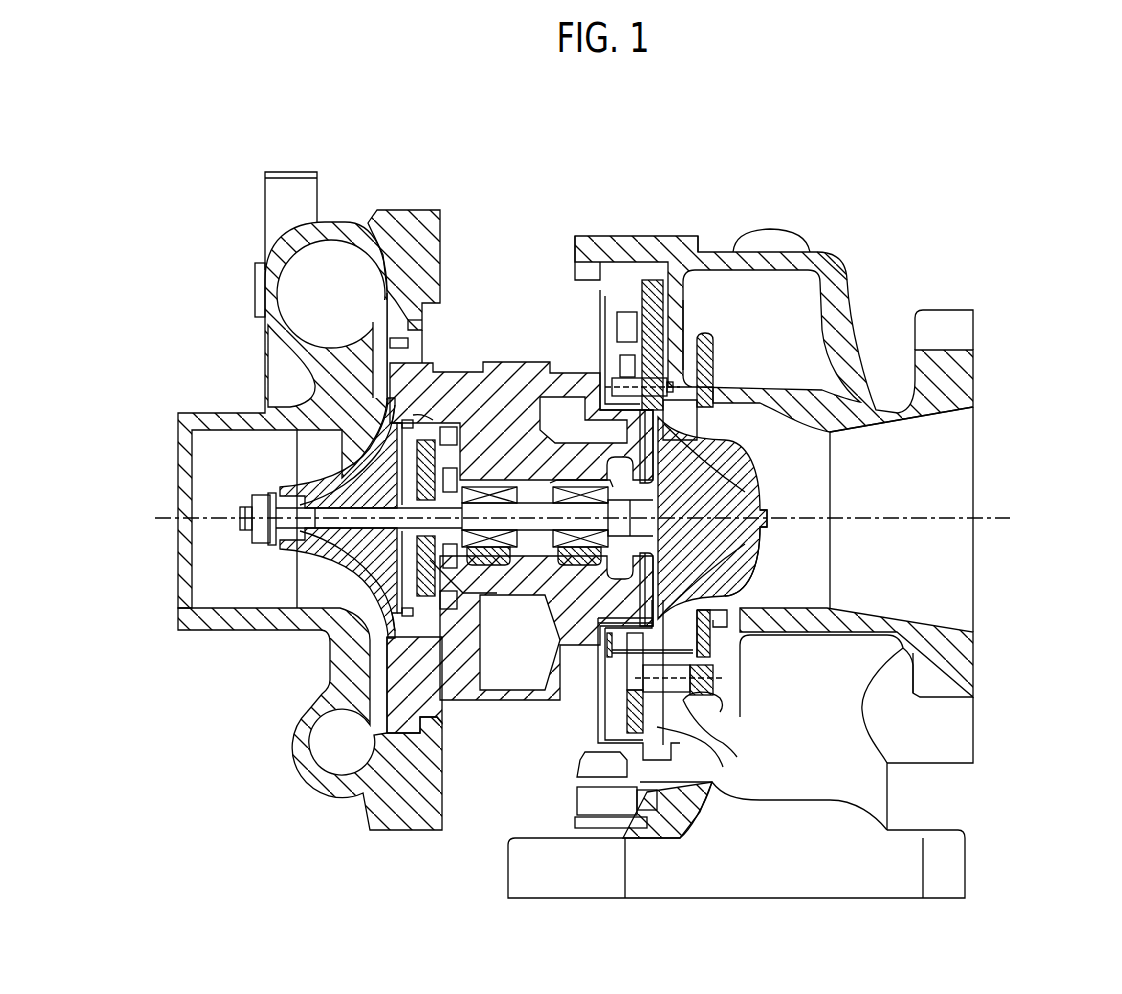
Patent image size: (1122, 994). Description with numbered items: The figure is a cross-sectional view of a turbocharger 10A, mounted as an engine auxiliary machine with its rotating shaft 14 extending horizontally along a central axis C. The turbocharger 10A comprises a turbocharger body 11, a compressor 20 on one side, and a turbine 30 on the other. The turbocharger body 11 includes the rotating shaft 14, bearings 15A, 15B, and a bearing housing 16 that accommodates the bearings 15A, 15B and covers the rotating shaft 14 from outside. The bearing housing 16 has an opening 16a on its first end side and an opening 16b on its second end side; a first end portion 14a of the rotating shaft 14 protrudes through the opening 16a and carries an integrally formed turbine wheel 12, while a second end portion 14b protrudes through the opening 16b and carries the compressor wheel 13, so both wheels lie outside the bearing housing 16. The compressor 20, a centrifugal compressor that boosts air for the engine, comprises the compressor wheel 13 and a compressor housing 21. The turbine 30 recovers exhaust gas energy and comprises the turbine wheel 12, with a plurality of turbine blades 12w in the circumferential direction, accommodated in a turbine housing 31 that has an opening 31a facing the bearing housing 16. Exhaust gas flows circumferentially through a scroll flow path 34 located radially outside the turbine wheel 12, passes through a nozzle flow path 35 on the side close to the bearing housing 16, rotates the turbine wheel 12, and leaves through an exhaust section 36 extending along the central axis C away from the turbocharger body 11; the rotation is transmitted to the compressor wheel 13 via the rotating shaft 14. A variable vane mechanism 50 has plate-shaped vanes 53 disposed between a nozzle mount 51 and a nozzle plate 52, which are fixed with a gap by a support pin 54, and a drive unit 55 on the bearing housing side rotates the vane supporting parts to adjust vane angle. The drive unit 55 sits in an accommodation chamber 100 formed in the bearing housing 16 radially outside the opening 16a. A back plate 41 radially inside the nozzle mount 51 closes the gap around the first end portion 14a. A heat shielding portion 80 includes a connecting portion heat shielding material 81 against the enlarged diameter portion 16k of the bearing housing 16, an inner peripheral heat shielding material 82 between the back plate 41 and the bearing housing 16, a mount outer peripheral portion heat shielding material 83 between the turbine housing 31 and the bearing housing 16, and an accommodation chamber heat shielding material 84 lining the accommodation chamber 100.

The turbocharger 10A is at (612, 185).
The turbocharger body 11 is at (450, 362).
The turbine wheel 12 is at (745, 488).
The turbine blade 12w is at (737, 582).
The compressor wheel 13 is at (305, 480).
The rotating shaft 14 is at (533, 530).
The first end portion 14a is at (762, 530).
The second end portion 14b is at (243, 521).
The bearing 15A is at (582, 565).
The bearing 15B is at (487, 565).
The bearing housing 16 is at (518, 387).
The opening 16a is at (742, 560).
The opening 16b is at (400, 598).
The enlarged diameter portion 16k is at (608, 312).
The compressor 20 is at (400, 200).
The compressor housing 21 is at (348, 224).
The turbine 30 is at (862, 291).
The turbine housing 31 is at (818, 268).
The opening 31a is at (585, 275).
The scroll flow path 34 is at (782, 255).
The nozzle flow path 35 is at (684, 370).
The exhaust section 36 is at (950, 425).
The back plate 41 is at (690, 462).
The variable vane mechanism 50 is at (718, 328).
The nozzle mount 51 is at (650, 280).
The nozzle plate 52 is at (703, 708).
The vane 53 is at (710, 627).
The support pin 54 is at (720, 692).
The drive unit 55 is at (588, 760).
The heat shielding portion 80 is at (624, 207).
The connecting portion heat shielding material 81 is at (587, 236).
The inner peripheral heat shielding material 82 is at (673, 432).
The mount outer peripheral portion heat shielding material 83 is at (660, 252).
The accommodation chamber heat shielding material 84 is at (602, 340).
The accommodation chamber 100 is at (623, 780).
The central axis C is at (1010, 518).